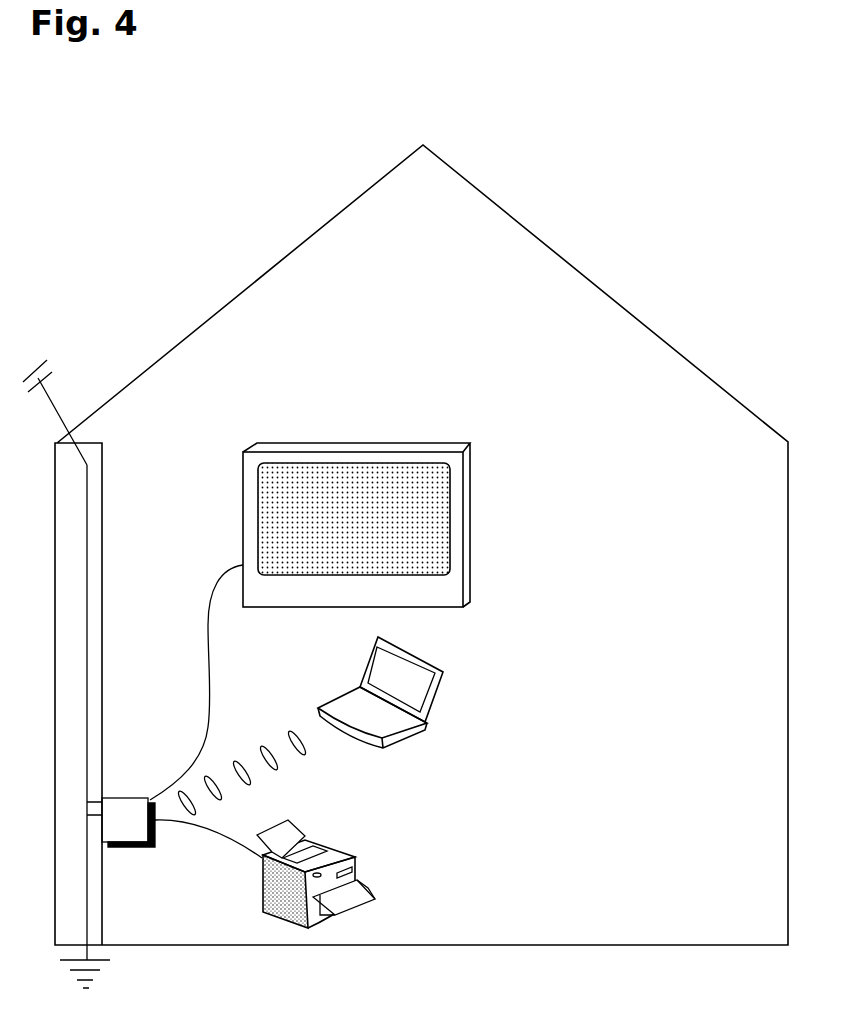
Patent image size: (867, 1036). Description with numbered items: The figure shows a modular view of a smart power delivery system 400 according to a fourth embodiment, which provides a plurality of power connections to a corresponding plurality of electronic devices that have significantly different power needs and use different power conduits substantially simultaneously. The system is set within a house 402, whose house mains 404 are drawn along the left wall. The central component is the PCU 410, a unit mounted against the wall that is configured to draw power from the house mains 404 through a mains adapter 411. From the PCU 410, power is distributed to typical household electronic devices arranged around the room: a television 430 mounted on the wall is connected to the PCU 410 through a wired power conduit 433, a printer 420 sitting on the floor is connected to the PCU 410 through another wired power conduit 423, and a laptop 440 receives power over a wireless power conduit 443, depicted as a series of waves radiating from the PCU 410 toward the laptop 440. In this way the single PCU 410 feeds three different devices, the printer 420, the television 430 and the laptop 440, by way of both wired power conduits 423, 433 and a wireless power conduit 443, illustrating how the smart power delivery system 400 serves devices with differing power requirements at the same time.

The smart power delivery system 400 is at (620, 193).
The house 402 is at (230, 300).
The house mains 404 is at (87, 577).
The PCU 410 is at (127, 848).
The mains adapter 411 is at (100, 800).
The printer 420 is at (355, 868).
The wired power conduit 423 is at (235, 845).
The television 430 is at (373, 447).
The wired power conduit 433 is at (209, 658).
The laptop 440 is at (403, 742).
The wireless power conduit 443 is at (235, 757).